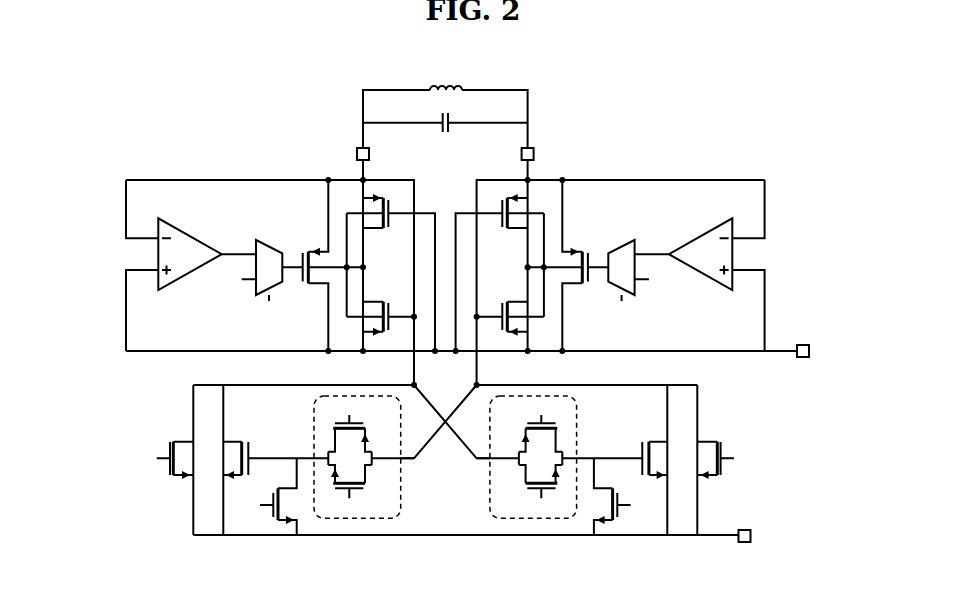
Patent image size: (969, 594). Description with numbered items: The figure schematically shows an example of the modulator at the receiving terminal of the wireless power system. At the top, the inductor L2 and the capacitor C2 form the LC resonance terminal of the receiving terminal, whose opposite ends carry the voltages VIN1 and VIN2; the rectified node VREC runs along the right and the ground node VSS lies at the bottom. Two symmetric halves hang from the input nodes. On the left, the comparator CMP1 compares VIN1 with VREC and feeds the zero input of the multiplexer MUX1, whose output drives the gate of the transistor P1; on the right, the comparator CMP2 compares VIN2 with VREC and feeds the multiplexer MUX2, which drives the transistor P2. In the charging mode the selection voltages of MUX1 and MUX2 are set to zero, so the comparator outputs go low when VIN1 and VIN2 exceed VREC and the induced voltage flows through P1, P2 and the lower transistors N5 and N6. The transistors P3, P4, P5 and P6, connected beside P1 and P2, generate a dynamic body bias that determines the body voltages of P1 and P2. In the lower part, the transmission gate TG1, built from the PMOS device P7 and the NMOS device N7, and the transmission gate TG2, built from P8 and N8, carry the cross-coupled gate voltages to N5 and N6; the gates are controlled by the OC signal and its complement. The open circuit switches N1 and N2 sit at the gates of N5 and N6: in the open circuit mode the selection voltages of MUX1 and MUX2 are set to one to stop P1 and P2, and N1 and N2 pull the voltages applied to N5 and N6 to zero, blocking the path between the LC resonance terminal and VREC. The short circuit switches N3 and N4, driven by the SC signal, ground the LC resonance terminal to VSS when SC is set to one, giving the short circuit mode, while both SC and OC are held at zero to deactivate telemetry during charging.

The inductor of LC resonance terminal L2 is at (445, 107).
The capacitor of LC resonance terminal C2 is at (445, 133).
The first input voltage VIN1 is at (346, 164).
The second input voltage VIN2 is at (545, 164).
The rectified voltage VREC is at (803, 340).
The ground node VSS is at (744, 526).
The first comparator CMP1 is at (207, 248).
The second comparator CMP2 is at (684, 248).
The first multiplexer MUX1 is at (262, 268).
The second multiplexer MUX2 is at (629, 268).
The first PMOS transistor P1 is at (330, 265).
The second PMOS transistor P2 is at (561, 265).
The third PMOS transistor P3 is at (391, 272).
The fourth PMOS transistor P4 is at (500, 272).
The fifth PMOS transistor P5 is at (380, 310).
The sixth PMOS transistor P6 is at (510, 310).
The PMOS transistor of first transmission gate P7 is at (361, 420).
The PMOS transistor of second transmission gate P8 is at (530, 420).
The first open circuit switch N1 is at (266, 496).
The second open circuit switch N2 is at (624, 496).
The first short circuit switch N3 is at (165, 452).
The second short circuit switch N4 is at (726, 452).
The fifth NMOS transistor N5 is at (275, 452).
The sixth NMOS transistor N6 is at (614, 452).
The NMOS transistor of first transmission gate N7 is at (360, 493).
The NMOS transistor of second transmission gate N8 is at (530, 493).
The first transmission gate TG1 is at (349, 457).
The second transmission gate TG2 is at (542, 457).